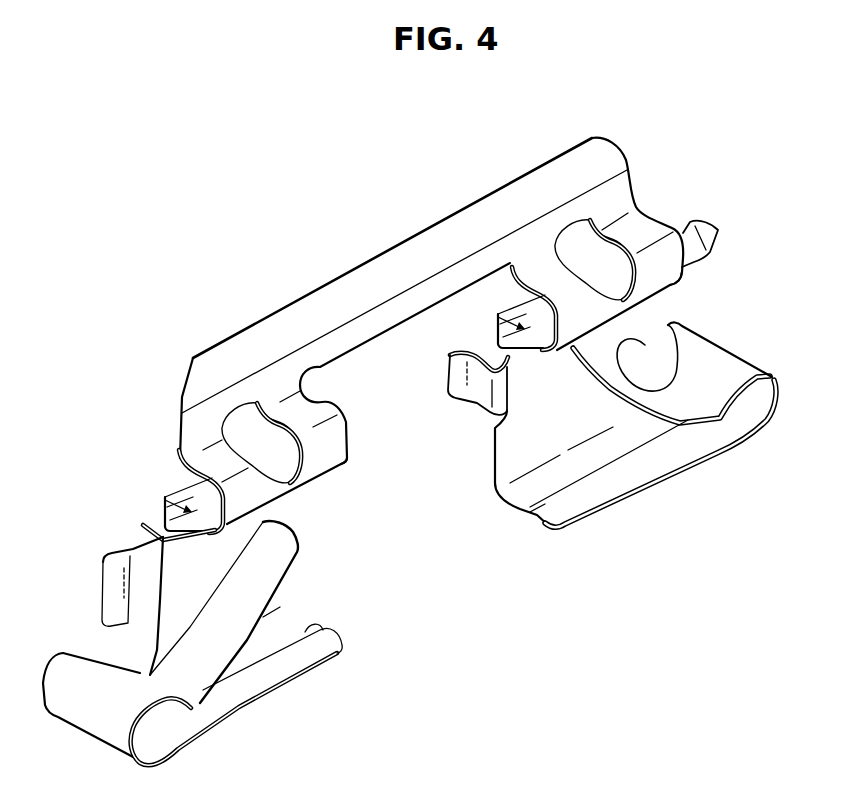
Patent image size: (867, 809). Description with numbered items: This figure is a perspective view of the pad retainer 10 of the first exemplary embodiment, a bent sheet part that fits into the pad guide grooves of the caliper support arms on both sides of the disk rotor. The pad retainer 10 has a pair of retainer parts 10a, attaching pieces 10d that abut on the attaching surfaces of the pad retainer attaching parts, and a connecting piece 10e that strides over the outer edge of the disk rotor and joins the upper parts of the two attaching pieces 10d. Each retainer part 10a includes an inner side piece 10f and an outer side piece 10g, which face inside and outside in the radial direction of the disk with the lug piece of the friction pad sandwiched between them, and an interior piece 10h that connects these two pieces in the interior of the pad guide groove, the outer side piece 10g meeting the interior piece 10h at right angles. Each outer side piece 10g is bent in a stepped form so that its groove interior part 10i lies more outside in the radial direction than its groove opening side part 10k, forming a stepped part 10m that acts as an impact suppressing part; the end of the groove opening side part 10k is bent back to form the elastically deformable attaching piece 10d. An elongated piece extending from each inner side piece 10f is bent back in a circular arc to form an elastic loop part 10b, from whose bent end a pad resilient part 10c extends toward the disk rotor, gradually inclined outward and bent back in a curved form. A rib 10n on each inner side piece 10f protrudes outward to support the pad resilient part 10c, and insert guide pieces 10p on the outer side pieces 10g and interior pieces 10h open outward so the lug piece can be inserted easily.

The pad retainer 10 is at (395, 157).
The retainer part 10a is at (126, 540).
The elastic loop part 10b is at (100, 727).
The pad resilient part 10c is at (273, 568).
The attaching piece 10d is at (317, 417).
The connecting piece 10e is at (385, 260).
The inner side piece 10f is at (287, 667).
The outer side piece 10g is at (330, 487).
The interior piece 10h is at (153, 630).
The groove interior part 10i is at (178, 480).
The groove opening side part 10k is at (212, 512).
The stepped part 10m is at (163, 498).
The rib 10n is at (317, 627).
The insert guide piece 10p is at (102, 590).